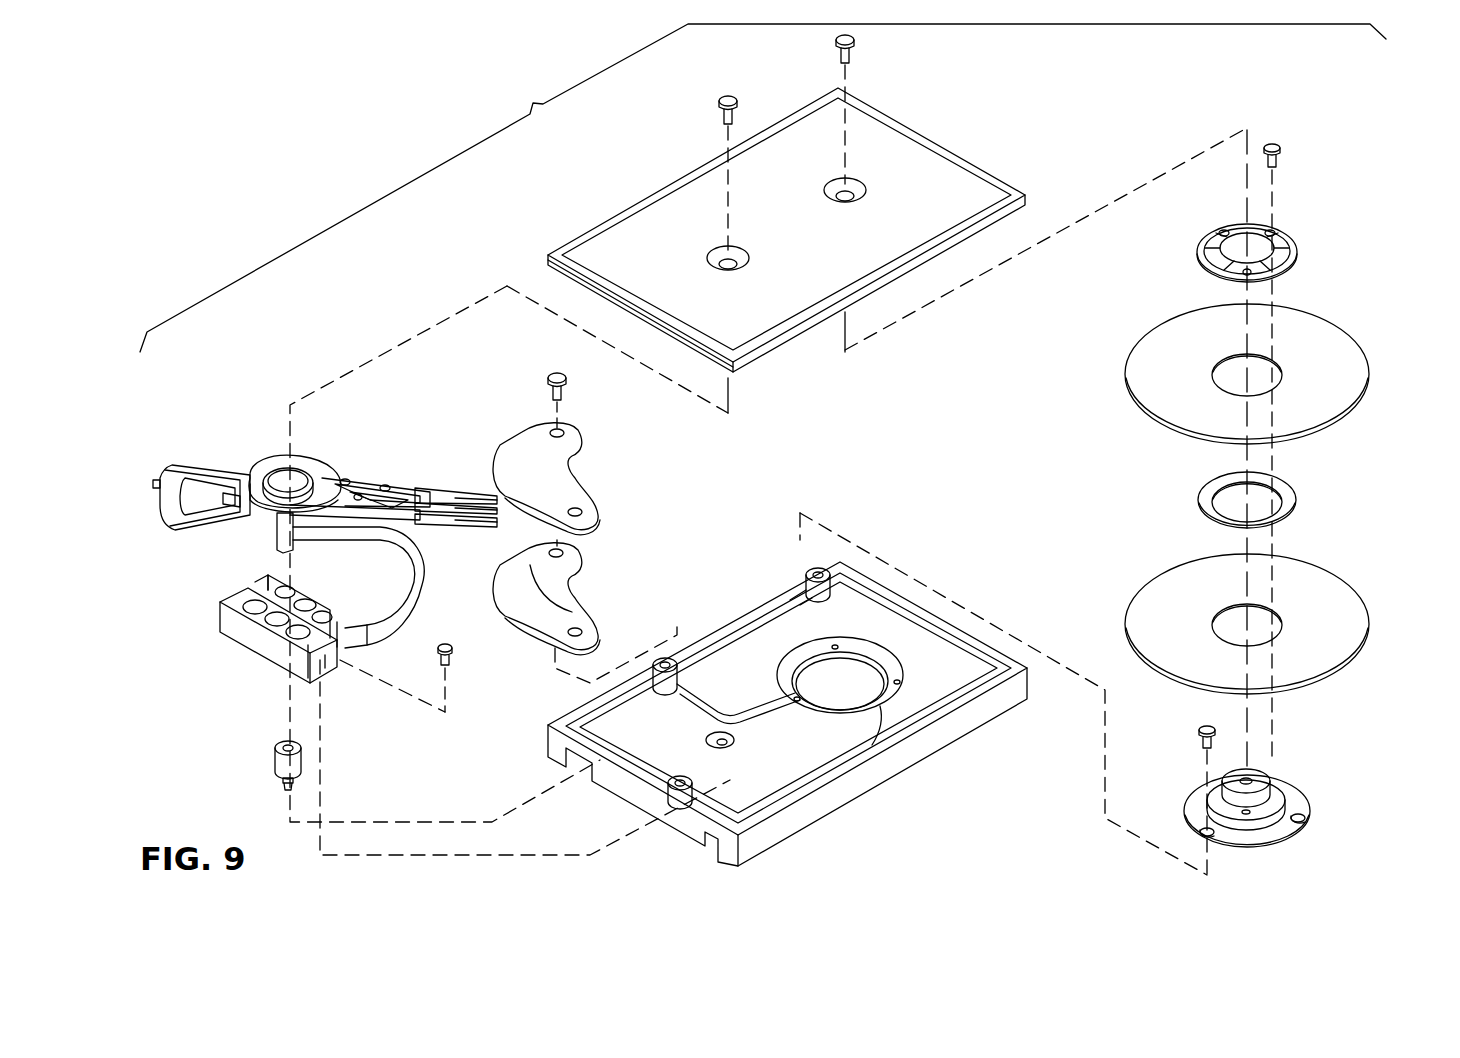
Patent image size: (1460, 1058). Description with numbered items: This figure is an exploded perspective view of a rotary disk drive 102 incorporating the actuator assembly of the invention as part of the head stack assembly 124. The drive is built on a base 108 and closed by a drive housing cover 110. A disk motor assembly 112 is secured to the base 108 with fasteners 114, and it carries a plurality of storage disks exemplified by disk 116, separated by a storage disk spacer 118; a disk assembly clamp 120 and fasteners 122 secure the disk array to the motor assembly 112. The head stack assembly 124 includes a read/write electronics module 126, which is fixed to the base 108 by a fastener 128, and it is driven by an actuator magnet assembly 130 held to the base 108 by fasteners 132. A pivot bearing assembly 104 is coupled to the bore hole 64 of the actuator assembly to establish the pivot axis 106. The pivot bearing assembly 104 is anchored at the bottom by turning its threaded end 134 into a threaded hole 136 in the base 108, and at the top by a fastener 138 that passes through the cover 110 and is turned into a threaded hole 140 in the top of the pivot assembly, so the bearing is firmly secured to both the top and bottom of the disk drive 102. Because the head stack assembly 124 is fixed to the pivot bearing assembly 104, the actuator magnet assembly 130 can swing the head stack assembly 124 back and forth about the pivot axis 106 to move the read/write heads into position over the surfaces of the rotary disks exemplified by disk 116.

The bore hole 64 is at (300, 476).
The disk drive 102 is at (763, 188).
The pivot bearing assembly 104 is at (273, 766).
The pivot axis 106 is at (290, 425).
The base 108 is at (980, 728).
The drive housing cover 110 is at (925, 143).
The disk motor assembly 112 is at (1315, 782).
The fasteners 114 is at (1198, 740).
The disk 116 is at (1342, 573).
The storage disk spacer 118 is at (1292, 521).
The disk assembly clamp 120 is at (1297, 266).
The fasteners 122 is at (1282, 153).
The head stack assembly 124 is at (350, 462).
The read/write electronics module 126 is at (240, 648).
The fastener 128 is at (453, 660).
The actuator magnet assembly 130 is at (598, 514).
The fasteners 132 is at (570, 380).
The threaded end 134 is at (281, 786).
The threaded hole 136 is at (735, 740).
The fastener 138 is at (717, 108).
The threaded hole 140 is at (283, 746).